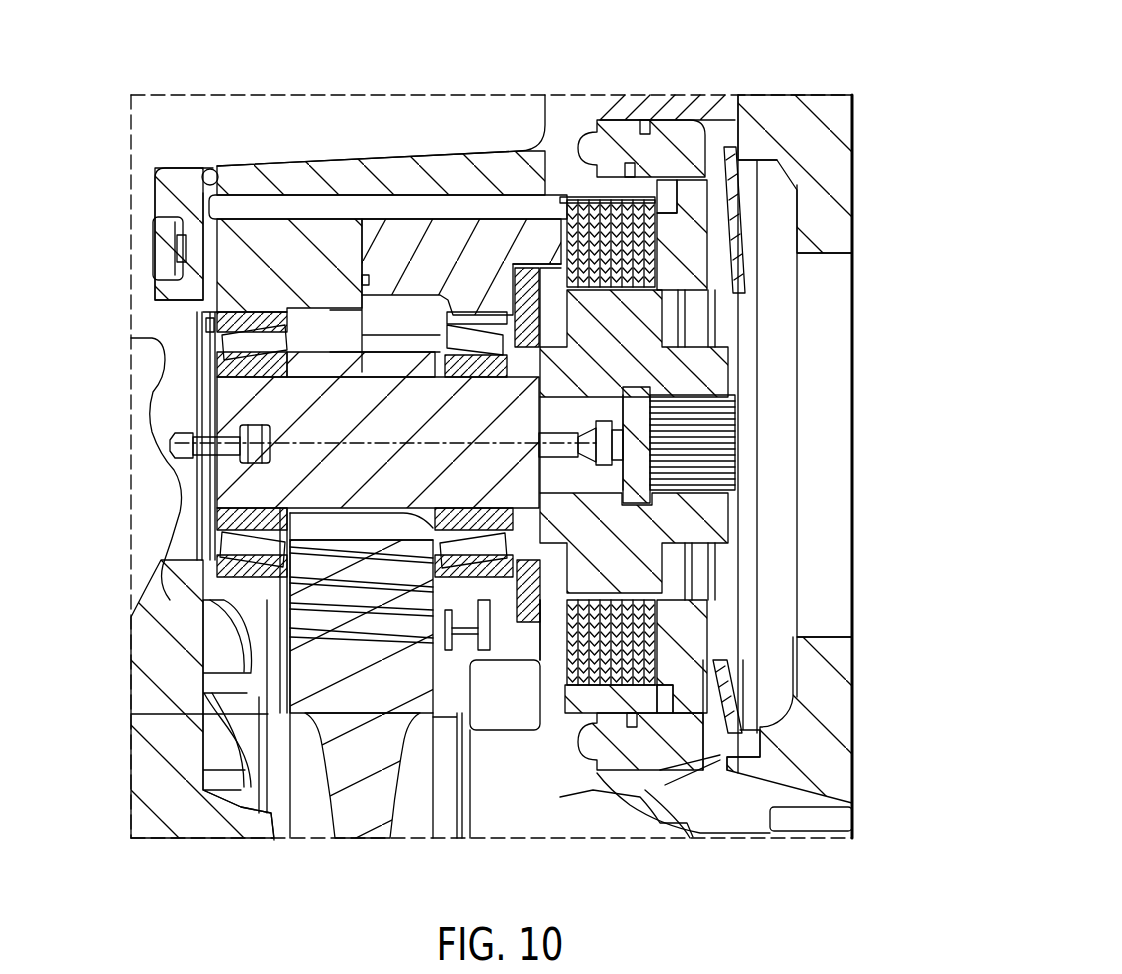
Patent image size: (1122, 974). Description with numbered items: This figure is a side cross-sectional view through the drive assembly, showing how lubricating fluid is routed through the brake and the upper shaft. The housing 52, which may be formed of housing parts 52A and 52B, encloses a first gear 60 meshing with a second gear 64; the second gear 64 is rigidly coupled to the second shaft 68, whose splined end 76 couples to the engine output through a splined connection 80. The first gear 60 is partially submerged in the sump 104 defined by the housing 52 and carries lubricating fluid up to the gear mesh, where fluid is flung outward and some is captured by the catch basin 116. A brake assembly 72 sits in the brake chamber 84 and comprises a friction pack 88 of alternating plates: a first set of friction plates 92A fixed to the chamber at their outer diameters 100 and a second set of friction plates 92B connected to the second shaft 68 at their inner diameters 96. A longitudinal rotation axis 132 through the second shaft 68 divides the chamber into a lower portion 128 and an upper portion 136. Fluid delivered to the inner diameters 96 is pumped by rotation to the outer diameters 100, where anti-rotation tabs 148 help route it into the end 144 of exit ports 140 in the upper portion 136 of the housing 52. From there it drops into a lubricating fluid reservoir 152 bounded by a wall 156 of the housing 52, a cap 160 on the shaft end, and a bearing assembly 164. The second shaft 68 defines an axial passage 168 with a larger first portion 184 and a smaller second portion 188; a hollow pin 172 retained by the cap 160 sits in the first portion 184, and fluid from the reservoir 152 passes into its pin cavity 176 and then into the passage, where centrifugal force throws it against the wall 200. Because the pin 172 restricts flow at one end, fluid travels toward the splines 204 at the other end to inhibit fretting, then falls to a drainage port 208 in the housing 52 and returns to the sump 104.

The housing 52 is at (452, 148).
The housing part 52A is at (311, 182).
The housing part 52B is at (418, 182).
The first gear 60 is at (345, 760).
The second gear 64 is at (323, 566).
The second shaft 68 is at (342, 405).
The brake assembly 72 is at (568, 708).
The end of the second shaft 76 is at (705, 365).
The splined connection 80 is at (738, 438).
The brake chamber 84 is at (662, 648).
The friction pack 88 is at (665, 249).
The first set of friction plates 92A is at (629, 700).
The second set of friction plates 92B is at (548, 590).
The inner diameter 96 is at (556, 280).
The outer diameter 100 is at (575, 192).
The sump 104 is at (496, 820).
The catch basin 116 is at (200, 714).
The lower portion of the brake chamber 128 is at (618, 608).
The longitudinal rotation axis 132 is at (565, 435).
The upper portion of the brake chamber 136 is at (549, 330).
The exit ports 140 is at (430, 165).
The end of the exit port 144 is at (605, 120).
The anti-rotation tabs 148 is at (612, 192).
The lubricating fluid reservoir 152 is at (194, 330).
The wall of the housing 156 is at (183, 282).
The cap 160 is at (200, 340).
The bearing assembly 164 is at (263, 307).
The axial passage 168 is at (210, 578).
The pin 172 is at (166, 461).
The pin cavity 176 is at (170, 448).
The first portion of the axial passage 184 is at (256, 474).
The second portion of the axial passage 188 is at (580, 442).
The wall of the axial passage 200 is at (396, 443).
The splines 204 is at (652, 411).
The drainage port 208 is at (721, 790).